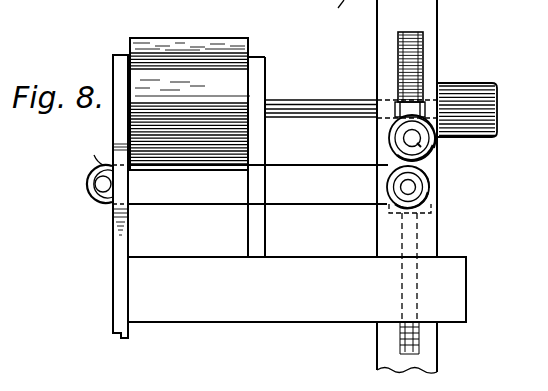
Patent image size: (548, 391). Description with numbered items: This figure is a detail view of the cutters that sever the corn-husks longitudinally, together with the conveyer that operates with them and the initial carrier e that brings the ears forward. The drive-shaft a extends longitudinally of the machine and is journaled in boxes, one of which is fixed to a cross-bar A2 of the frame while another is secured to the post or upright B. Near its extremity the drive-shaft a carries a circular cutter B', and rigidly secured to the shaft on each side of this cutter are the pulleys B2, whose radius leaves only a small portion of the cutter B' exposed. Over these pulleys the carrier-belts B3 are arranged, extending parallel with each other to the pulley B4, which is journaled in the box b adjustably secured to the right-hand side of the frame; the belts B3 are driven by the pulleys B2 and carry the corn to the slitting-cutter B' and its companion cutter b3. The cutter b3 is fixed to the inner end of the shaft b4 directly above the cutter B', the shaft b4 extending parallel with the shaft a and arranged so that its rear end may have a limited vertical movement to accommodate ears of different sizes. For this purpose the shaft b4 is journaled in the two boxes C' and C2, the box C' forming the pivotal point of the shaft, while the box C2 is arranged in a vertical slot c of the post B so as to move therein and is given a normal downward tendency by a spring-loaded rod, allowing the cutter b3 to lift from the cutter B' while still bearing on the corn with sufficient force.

The cross-bar A2 is at (289, 196).
The post or upright B is at (429, 186).
The circular cutter B' is at (455, 176).
The pulleys B2 is at (427, 197).
The carrier-belts B3 is at (334, 168).
The pulley B4 is at (86, 194).
The drive-shaft a is at (405, 187).
The box b is at (94, 148).
The cutter b3 is at (434, 145).
The shaft b4 is at (410, 140).
The vertical slot c is at (398, 135).
The box C' is at (436, 64).
The box C2 is at (423, 100).
The carrier e is at (190, 104).